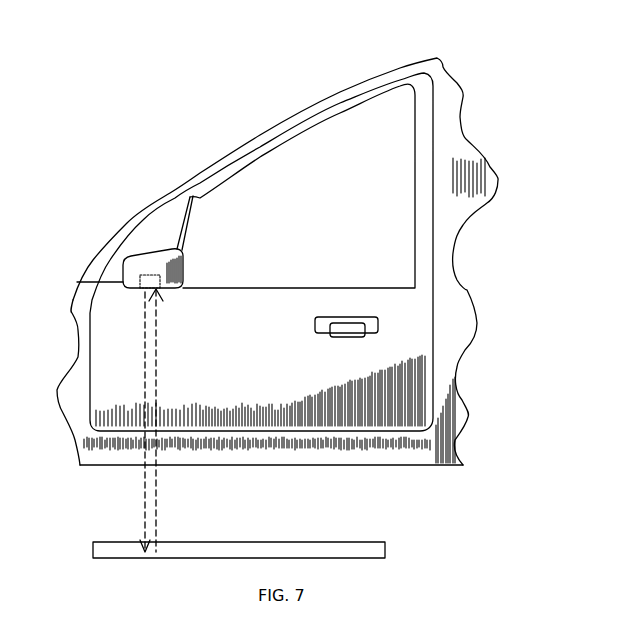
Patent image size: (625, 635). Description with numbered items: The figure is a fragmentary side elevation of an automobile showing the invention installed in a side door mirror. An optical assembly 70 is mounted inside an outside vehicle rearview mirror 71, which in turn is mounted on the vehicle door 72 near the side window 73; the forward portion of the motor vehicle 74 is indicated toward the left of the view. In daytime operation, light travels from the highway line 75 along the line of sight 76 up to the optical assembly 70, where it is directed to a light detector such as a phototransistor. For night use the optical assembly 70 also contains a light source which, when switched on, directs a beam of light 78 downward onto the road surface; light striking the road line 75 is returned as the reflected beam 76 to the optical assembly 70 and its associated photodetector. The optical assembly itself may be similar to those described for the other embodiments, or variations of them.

The optical assembly 70 is at (77, 282).
The outside vehicle rearview mirror 71 is at (167, 263).
The vehicle door 72 is at (415, 342).
The side window 73 is at (405, 158).
The forward portion of the motor vehicle 74 is at (65, 382).
The highway line 75 is at (375, 550).
The line of sight 76 is at (157, 485).
The beam of light 78 is at (143, 485).